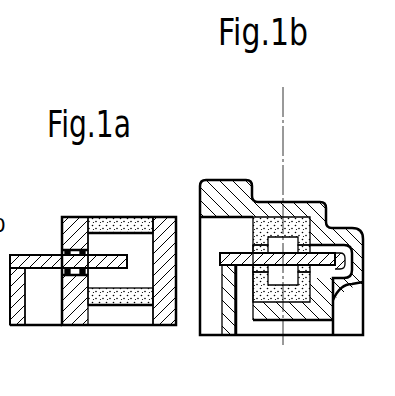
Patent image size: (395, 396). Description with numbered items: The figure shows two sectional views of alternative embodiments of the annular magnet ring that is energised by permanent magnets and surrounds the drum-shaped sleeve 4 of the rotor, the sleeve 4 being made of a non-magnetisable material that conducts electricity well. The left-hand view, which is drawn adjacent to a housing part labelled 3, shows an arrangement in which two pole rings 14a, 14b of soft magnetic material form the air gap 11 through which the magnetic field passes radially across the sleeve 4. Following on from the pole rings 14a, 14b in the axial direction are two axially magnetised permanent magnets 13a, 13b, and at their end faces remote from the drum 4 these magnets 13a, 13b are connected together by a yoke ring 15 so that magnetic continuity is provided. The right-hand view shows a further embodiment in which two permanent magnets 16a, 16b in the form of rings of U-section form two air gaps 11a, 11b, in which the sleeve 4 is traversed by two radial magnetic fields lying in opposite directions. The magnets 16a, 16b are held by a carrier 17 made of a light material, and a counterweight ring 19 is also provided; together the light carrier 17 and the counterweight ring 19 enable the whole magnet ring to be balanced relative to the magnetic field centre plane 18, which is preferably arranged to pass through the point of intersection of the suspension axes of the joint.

In FIG. 1A, the motor housing 3 is at (33, 395).
In FIG. 1A, the part of the rotor 4 is at (33, 257).
In FIG. 1B, the part of the rotor 4 is at (244, 257).
In FIG. 1A, the magnetic field 11 is at (90, 251).
In FIG. 1B, the air gap 11a is at (250, 272).
In FIG. 1B, the air gap 11b is at (333, 300).
In FIG. 1A, the permanent magnet 13a is at (112, 219).
In FIG. 1A, the permanent magnet 13b is at (125, 298).
In FIG. 1A, the pole ring 14a is at (73, 224).
In FIG. 1A, the pole ring 14b is at (79, 303).
In FIG. 1A, the yoke ring 15 is at (163, 222).
In FIG. 1B, the permanent magnet 16a is at (292, 222).
In FIG. 1B, the permanent magnet 16b is at (292, 300).
In FIG. 1B, the carrier 17 is at (268, 208).
In FIG. 1B, the magnetic field centre plane 18 is at (284, 108).
In FIG. 1B, the counterweight ring 19 is at (210, 192).